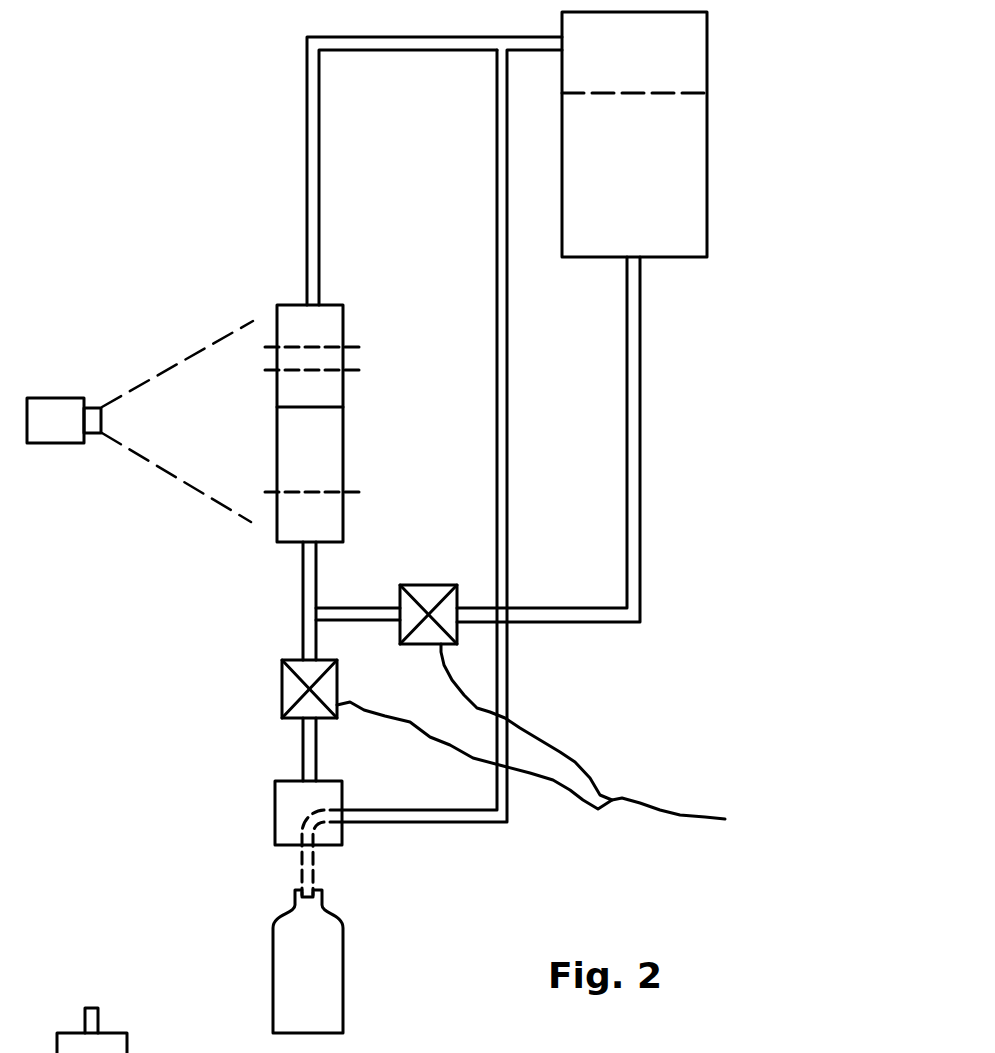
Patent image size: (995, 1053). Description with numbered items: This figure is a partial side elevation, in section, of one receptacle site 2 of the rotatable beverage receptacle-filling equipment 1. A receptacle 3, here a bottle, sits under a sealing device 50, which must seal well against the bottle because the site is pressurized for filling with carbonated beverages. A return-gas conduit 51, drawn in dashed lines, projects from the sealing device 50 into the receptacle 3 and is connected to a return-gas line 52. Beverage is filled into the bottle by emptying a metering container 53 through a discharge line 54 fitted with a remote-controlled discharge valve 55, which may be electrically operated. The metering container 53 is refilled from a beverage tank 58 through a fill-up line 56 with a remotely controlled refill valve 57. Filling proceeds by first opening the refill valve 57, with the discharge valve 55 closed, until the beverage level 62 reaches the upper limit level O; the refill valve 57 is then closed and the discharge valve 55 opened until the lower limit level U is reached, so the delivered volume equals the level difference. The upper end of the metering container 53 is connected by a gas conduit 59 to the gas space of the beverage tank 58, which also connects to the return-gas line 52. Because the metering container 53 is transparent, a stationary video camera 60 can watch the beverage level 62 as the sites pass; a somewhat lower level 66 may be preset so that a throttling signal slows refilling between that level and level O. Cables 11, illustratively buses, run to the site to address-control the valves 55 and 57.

The beverage receptacle-filling equipment 1 is at (205, 276).
The receptacle site 2 is at (182, 642).
The receptacle 3 is at (330, 950).
The cables 11 is at (700, 768).
The sealing device 50 is at (293, 800).
The return-gas conduit 51 is at (297, 895).
The return-gas line 52 is at (437, 824).
The metering container 53 is at (278, 522).
The discharge line 54 is at (303, 636).
The discharge valve 55 is at (295, 691).
The fill-up line 56 is at (585, 614).
The refill valve 57 is at (428, 593).
The beverage tank 58 is at (683, 150).
The gas conduit 59 is at (312, 143).
The video camera 60 is at (52, 432).
The beverage level 62 is at (312, 409).
The lower level 66 is at (352, 372).